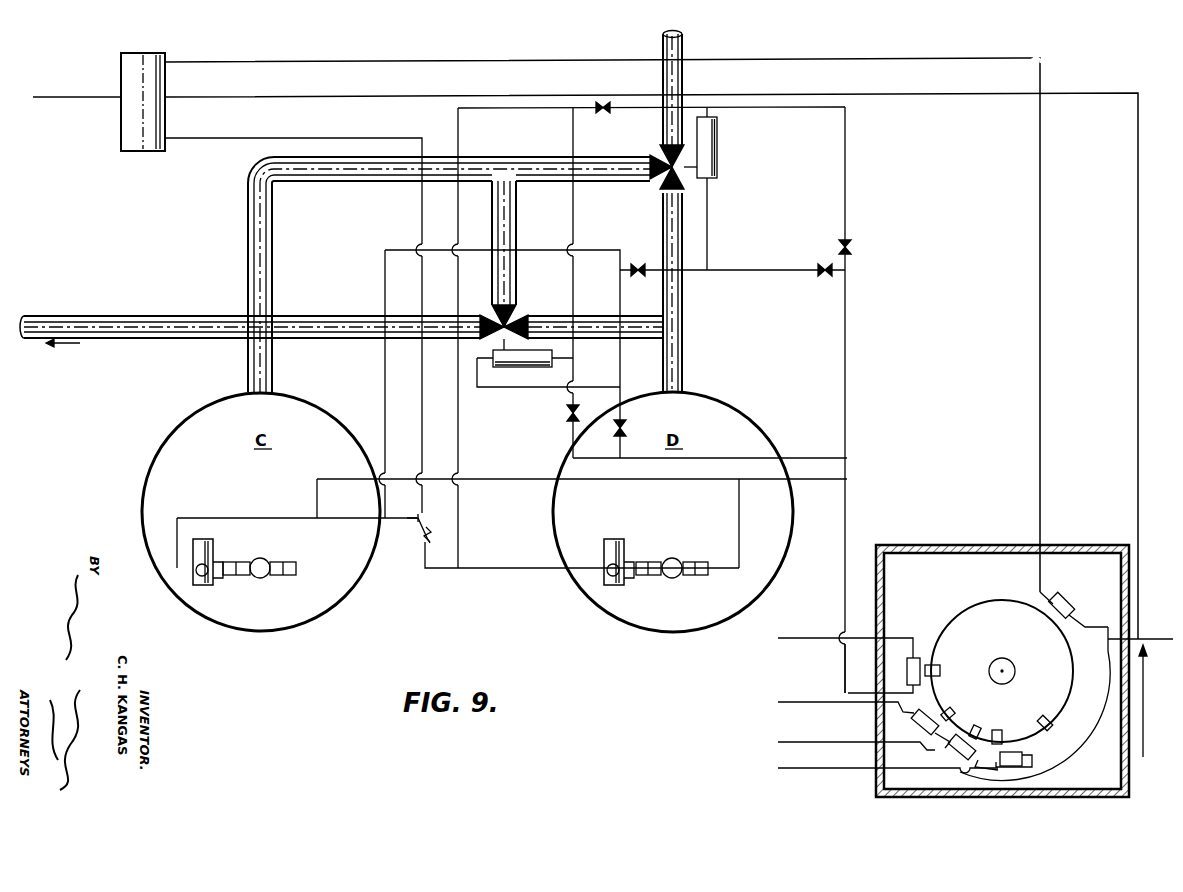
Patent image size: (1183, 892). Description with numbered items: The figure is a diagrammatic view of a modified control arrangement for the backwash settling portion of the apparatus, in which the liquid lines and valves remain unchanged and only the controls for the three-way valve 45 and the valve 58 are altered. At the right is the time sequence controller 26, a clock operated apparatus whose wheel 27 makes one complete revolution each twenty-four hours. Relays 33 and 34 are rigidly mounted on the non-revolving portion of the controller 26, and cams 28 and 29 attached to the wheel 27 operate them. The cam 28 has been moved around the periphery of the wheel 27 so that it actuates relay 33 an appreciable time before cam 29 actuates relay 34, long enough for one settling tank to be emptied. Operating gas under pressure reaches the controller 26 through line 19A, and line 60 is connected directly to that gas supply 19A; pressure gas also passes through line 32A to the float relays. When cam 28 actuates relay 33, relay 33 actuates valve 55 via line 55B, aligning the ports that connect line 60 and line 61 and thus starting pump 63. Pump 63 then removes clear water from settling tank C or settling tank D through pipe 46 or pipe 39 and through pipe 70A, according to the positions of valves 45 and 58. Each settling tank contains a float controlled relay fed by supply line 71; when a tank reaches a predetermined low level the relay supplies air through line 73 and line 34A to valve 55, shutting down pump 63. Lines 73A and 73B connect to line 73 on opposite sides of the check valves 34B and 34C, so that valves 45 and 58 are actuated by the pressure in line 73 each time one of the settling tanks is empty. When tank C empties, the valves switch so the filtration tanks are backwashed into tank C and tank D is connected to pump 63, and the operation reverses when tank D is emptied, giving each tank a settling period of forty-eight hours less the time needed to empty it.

The line 19A is at (1150, 638).
The time sequence controller 26 is at (874, 785).
The wheel 27 is at (970, 622).
The cam 28 is at (972, 733).
The cam 29 is at (1052, 722).
The line 32A is at (841, 481).
The relay 33 is at (1068, 600).
The relay 34 is at (1022, 757).
The line 34A is at (424, 426).
The check valve 34B is at (417, 520).
The check valve 34C is at (424, 536).
The pipe 39 is at (681, 366).
The 3-way valve 45 is at (660, 162).
The pipe 46 is at (252, 190).
The valve 55 is at (119, 81).
The line 55B is at (281, 62).
The valve 58 is at (508, 313).
The line 60 is at (301, 97).
The line 61 is at (41, 97).
The pump 63 is at (140, 318).
The pipe 70A is at (346, 318).
The supply line 71 is at (741, 550).
The line 73 is at (318, 522).
The line 73a 73A is at (384, 406).
The line 73b 73B is at (460, 406).